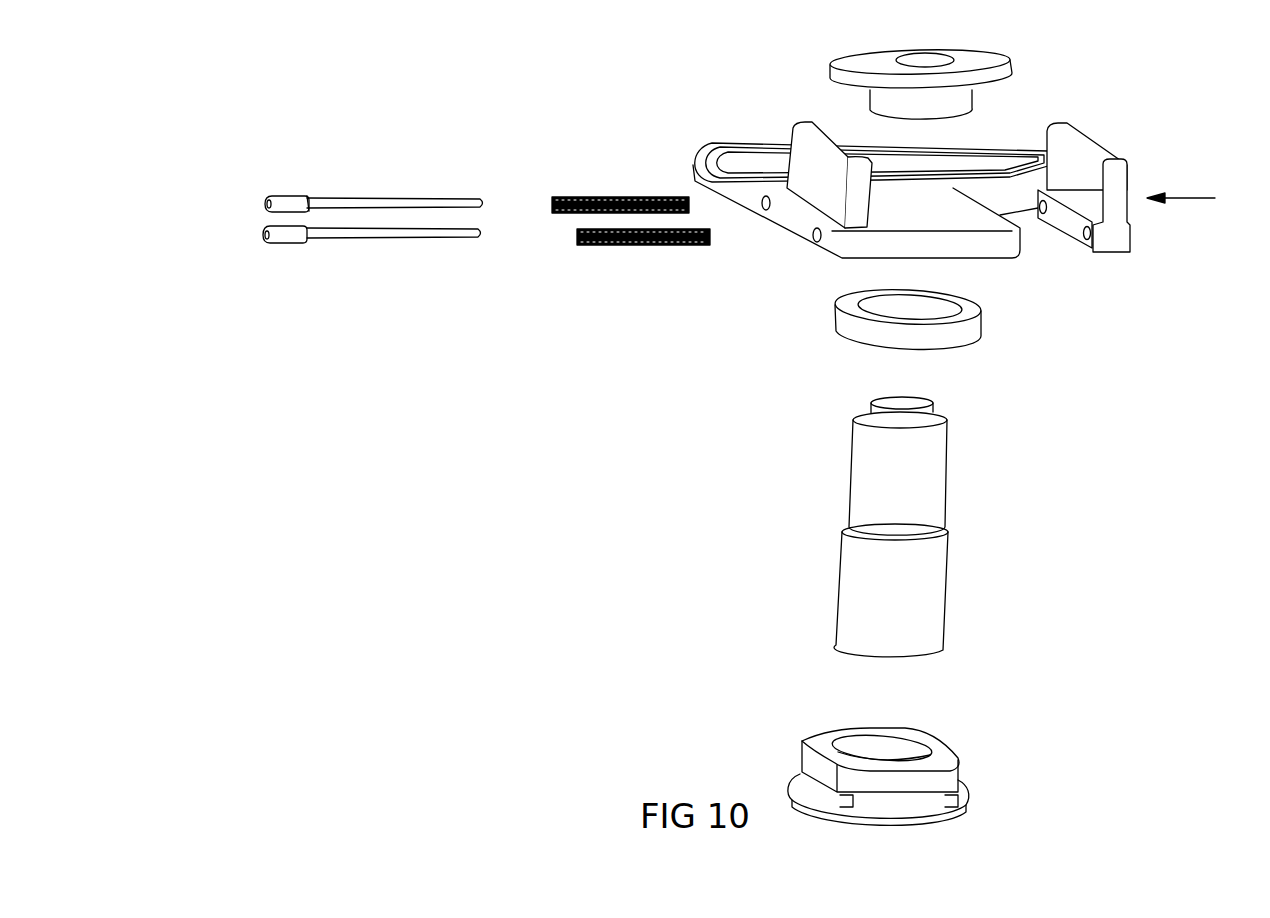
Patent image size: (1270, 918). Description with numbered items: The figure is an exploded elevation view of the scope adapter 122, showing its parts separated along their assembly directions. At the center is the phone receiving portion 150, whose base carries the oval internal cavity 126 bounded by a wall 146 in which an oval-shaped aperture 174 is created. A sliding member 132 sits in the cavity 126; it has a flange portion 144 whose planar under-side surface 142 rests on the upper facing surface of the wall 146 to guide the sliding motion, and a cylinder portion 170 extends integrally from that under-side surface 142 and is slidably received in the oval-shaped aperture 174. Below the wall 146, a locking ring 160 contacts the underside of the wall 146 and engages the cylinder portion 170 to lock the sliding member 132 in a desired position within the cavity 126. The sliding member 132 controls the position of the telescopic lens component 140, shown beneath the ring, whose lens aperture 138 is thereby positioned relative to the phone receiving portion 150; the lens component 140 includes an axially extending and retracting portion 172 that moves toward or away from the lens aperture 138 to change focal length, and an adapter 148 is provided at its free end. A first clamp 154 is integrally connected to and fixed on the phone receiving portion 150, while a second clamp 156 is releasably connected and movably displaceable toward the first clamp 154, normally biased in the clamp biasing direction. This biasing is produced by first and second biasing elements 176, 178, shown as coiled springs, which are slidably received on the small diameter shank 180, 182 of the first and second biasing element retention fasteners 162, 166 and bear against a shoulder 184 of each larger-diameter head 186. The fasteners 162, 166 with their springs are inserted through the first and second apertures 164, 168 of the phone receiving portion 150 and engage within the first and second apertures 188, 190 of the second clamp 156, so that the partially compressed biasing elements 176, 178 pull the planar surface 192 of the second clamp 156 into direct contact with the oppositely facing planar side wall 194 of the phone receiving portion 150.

The scope adapter 122 is at (947, 177).
The oval internal cavity 126 is at (864, 138).
The sliding member 132 is at (950, 81).
The lens aperture 138 is at (918, 52).
The telescopic lens component 140 is at (860, 474).
The planar under-side surface 142 is at (993, 90).
The flange portion 144 is at (1005, 78).
The wall 146 is at (732, 163).
The adapter 148 is at (812, 762).
The phone receiving portion 150 is at (923, 208).
The first clamp 154 is at (797, 140).
The second clamp 156 is at (1088, 142).
The locking ring 160 is at (832, 320).
The first biasing element retention fastener 162 is at (331, 184).
The first aperture 164 is at (762, 208).
The second biasing element retention fastener 166 is at (372, 251).
The second aperture 168 is at (812, 239).
The cylinder portion 170 is at (970, 104).
The axially extending and retracting portion 172 is at (935, 575).
The oval-shaped aperture 174 is at (910, 167).
The first biasing element 176 is at (640, 196).
The second biasing element 178 is at (668, 246).
The small diameter shank 180 is at (398, 199).
The small diameter shank 182 is at (388, 241).
The shoulder 184 is at (318, 188).
The head 186 is at (282, 197).
The first aperture 188 is at (1025, 212).
The second aperture 190 is at (1088, 241).
The planar surface 192 is at (1075, 243).
The planar side wall 194 is at (1005, 210).